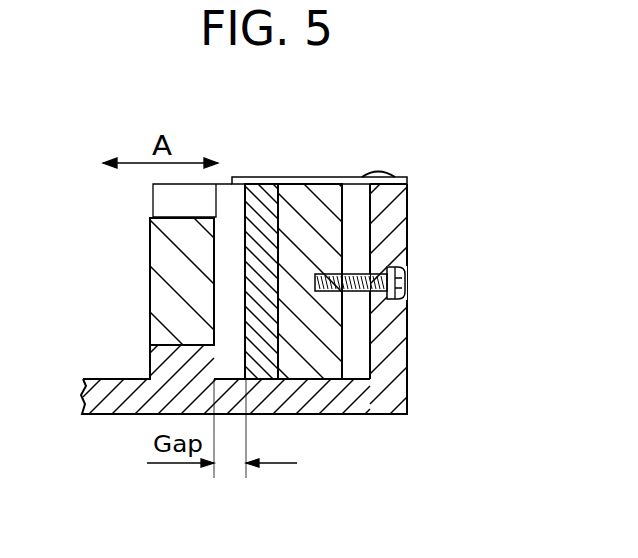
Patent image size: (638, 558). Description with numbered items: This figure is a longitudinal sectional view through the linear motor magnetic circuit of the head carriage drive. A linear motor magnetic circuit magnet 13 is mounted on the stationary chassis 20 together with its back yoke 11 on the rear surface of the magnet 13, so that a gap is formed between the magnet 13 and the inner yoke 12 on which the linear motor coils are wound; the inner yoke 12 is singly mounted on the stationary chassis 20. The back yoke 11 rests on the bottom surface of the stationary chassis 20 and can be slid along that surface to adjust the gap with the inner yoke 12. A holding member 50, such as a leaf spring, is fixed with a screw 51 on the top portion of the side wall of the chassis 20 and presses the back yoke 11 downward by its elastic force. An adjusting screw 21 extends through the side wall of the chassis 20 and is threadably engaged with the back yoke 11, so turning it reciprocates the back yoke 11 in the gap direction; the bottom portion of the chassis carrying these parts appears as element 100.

The back yoke 11 is at (303, 372).
The inner yoke 12 is at (160, 295).
The linear motor magnetic circuit magnet 13 is at (258, 198).
The stationary chassis 20 is at (398, 228).
The adjusting screw 21 is at (405, 297).
The holding member 50 is at (327, 180).
The screw 51 is at (388, 171).
The base 100 is at (364, 378).